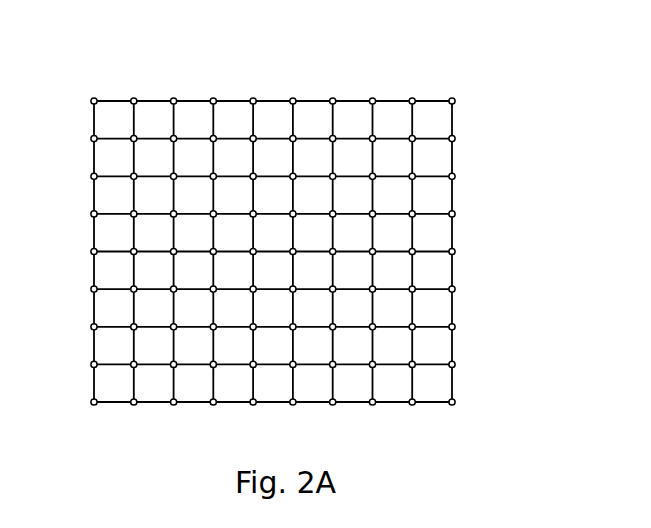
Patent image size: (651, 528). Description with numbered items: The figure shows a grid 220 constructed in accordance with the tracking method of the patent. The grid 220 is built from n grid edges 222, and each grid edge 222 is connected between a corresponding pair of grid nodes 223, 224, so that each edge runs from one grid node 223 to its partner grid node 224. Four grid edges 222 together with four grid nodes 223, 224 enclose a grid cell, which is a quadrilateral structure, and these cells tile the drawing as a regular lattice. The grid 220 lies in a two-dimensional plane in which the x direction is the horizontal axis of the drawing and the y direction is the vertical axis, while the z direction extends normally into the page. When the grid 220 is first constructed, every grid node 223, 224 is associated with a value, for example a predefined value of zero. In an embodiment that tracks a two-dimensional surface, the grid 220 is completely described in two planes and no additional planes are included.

The grid 220 is at (275, 243).
The grid edge 222 is at (113, 93).
The grid node 223 is at (90, 96).
The grid node 224 is at (138, 95).